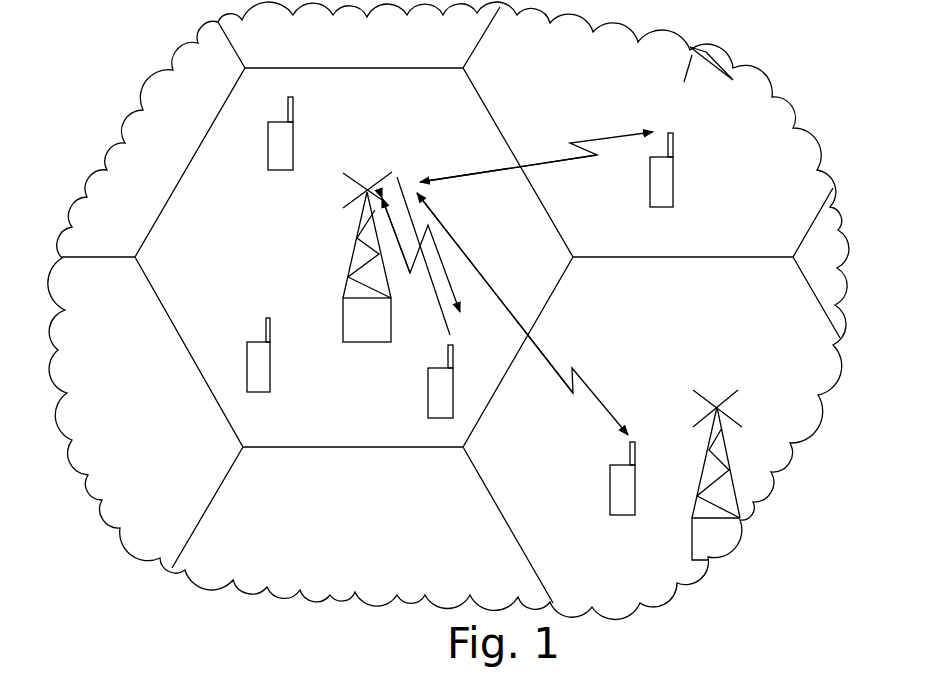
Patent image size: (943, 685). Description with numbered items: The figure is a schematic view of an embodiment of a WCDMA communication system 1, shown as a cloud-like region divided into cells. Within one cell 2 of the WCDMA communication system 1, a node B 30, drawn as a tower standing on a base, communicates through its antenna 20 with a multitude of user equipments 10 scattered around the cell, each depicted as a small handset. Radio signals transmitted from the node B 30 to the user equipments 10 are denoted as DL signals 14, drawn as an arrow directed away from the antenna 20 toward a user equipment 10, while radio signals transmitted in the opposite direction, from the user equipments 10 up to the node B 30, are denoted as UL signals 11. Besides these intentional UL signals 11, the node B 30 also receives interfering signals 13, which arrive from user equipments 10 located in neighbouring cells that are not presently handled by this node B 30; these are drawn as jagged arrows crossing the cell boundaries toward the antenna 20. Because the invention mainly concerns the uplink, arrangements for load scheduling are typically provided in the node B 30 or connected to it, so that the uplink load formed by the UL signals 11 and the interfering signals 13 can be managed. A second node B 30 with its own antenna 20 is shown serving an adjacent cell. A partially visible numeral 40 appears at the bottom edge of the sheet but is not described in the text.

The WCDMA communication system 1 is at (353, 593).
The cell 2 is at (170, 282).
The user equipment 10 is at (278, 157).
The UL signal 11 is at (433, 317).
The interfering signal 13 is at (590, 137).
The DL signal 14 is at (460, 295).
The antenna 20 is at (367, 190).
The node B 30 is at (350, 317).
The component 40 is at (82, 676).